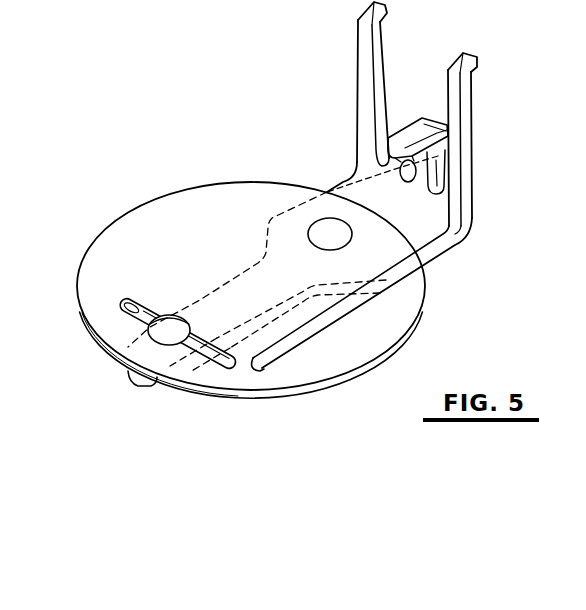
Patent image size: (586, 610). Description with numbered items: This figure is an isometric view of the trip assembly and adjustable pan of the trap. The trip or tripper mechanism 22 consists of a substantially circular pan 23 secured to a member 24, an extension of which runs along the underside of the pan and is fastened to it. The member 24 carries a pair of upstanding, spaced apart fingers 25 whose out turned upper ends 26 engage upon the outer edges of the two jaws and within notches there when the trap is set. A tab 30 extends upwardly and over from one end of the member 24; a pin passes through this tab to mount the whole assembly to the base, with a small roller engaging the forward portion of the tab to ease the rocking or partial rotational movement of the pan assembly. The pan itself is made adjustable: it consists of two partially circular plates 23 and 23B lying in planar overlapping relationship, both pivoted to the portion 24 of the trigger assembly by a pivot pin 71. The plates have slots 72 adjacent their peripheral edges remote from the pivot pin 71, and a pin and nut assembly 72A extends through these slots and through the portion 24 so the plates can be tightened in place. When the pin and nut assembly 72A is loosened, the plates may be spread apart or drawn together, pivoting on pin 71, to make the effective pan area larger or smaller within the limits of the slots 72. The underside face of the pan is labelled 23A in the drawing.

The trip mechanism 22 is at (206, 120).
The pan 23 is at (396, 327).
The disc bottom surface 23A is at (112, 331).
The partially circular plate 23B is at (137, 230).
The member 24 is at (424, 231).
The upstanding fingers 25 is at (358, 76).
The out turned upper ends 26 is at (378, 6).
The tab 30 is at (427, 118).
The pivot pin 71 is at (338, 241).
The slots 72 is at (142, 302).
The pin and nut assembly 72A is at (198, 320).